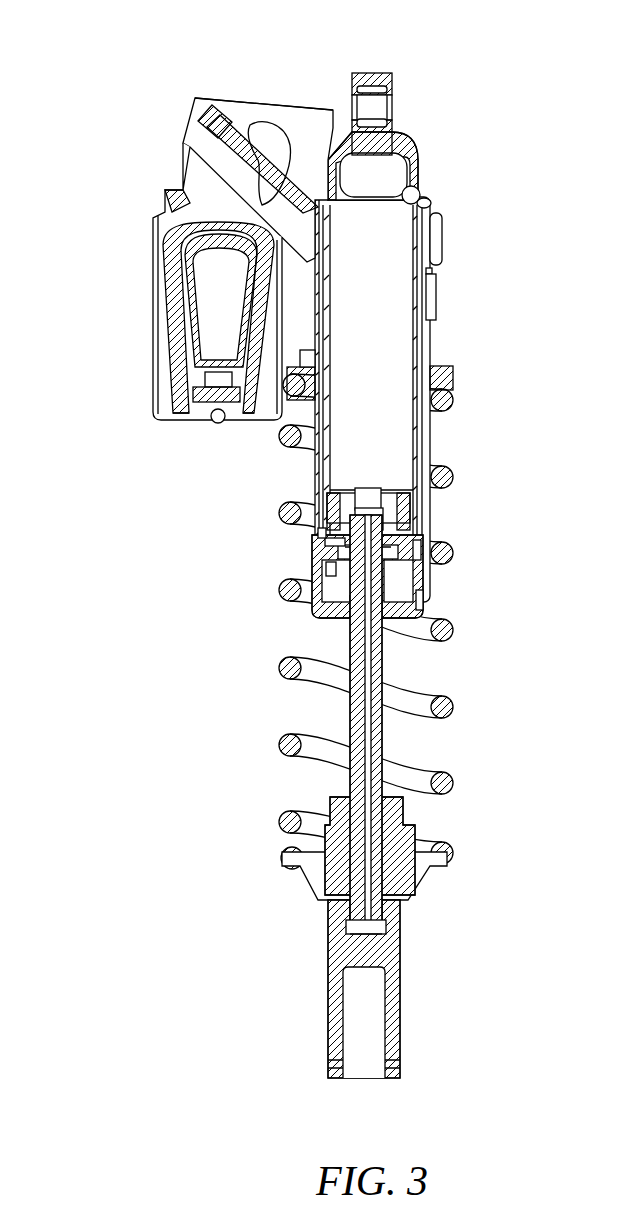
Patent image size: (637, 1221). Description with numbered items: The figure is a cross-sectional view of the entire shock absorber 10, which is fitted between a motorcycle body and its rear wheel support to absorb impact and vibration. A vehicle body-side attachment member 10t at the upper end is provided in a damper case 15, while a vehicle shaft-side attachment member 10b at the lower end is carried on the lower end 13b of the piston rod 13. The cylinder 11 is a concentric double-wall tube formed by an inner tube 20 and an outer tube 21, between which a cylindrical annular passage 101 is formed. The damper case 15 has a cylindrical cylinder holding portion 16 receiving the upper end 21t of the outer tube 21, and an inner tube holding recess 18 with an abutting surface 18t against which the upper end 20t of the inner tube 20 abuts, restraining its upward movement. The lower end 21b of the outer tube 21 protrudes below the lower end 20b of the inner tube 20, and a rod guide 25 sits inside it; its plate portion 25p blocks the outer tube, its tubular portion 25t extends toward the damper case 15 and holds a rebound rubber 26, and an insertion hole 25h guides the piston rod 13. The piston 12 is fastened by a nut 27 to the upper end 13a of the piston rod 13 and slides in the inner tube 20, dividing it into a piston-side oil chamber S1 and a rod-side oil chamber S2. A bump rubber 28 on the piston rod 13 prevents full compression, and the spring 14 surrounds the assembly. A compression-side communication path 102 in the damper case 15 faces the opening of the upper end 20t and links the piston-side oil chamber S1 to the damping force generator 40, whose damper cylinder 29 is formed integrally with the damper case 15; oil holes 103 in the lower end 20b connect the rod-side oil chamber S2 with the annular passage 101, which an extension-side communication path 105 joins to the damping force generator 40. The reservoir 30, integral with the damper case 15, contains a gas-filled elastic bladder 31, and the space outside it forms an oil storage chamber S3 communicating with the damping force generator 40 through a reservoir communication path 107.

The shock absorber 10 is at (528, 132).
The vehicle body-side attachment member 10t is at (392, 80).
The vehicle shaft-side attachment member 10b is at (400, 1065).
The cylinder 11 is at (547, 398).
The piston 12 is at (318, 482).
The piston rod 13 is at (384, 733).
The upper end of the piston rod 13a is at (395, 500).
The lower end of the piston rod 13b is at (375, 915).
The spring 14 is at (460, 780).
The damper case 15 is at (417, 165).
The cylinder holding portion 16 is at (436, 290).
The inner tube holding recess 18 is at (432, 245).
The abutting surface 18t is at (418, 197).
The inner tube 20 is at (420, 435).
The upper end of the inner tube 20t is at (440, 200).
The lower end of the inner tube 20b is at (422, 545).
The outer tube 21 is at (418, 455).
The upper end of the outer tube 21t is at (432, 270).
The lower end of the outer tube 21b is at (428, 598).
The rod guide 25 is at (328, 582).
The tubular portion 25t is at (322, 545).
The plate portion 25p is at (328, 563).
The insertion hole 25h is at (352, 620).
The rebound rubber 26 is at (420, 570).
The nut 27 is at (365, 505).
The bump rubber 28 is at (398, 830).
The damper cylinder 29 is at (225, 95).
The reservoir 30 is at (153, 306).
The bladder 31 is at (178, 293).
The damping force generator 40 is at (265, 100).
The annular passage 101 is at (420, 338).
The compression-side communication path 102 is at (382, 175).
The oil holes 103 is at (325, 530).
The extension-side communication path 105 is at (320, 150).
The reservoir communication path 107 is at (262, 232).
The piston-side oil chamber S1 is at (395, 368).
The rod-side oil chamber S2 is at (395, 555).
The oil storage chamber S3 is at (182, 330).